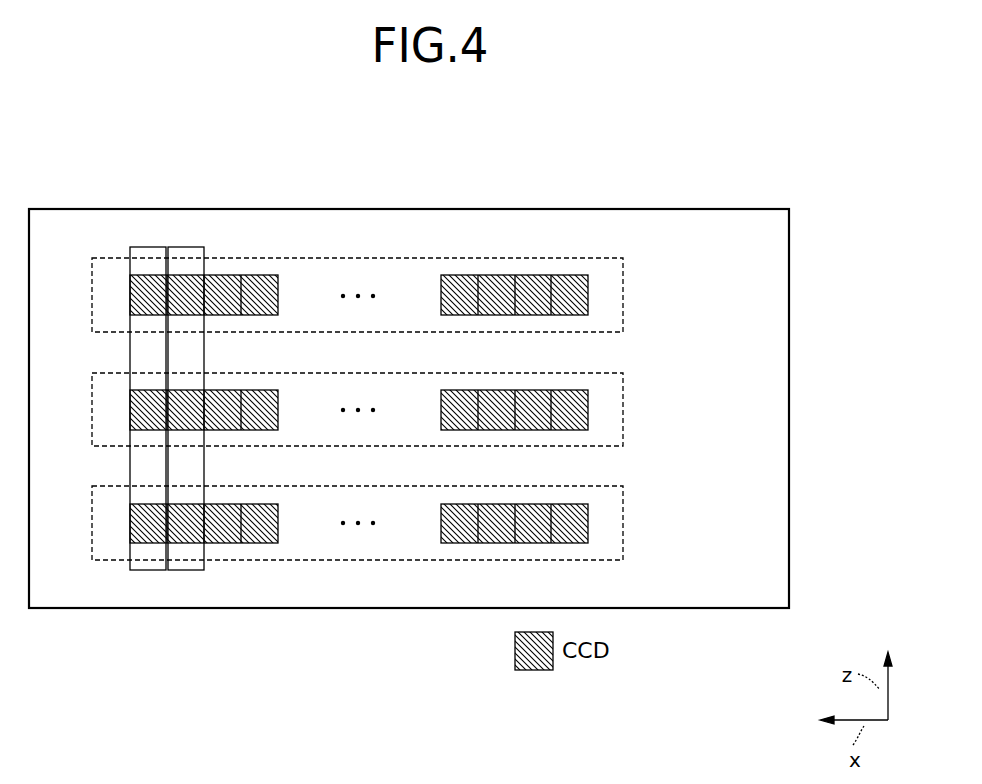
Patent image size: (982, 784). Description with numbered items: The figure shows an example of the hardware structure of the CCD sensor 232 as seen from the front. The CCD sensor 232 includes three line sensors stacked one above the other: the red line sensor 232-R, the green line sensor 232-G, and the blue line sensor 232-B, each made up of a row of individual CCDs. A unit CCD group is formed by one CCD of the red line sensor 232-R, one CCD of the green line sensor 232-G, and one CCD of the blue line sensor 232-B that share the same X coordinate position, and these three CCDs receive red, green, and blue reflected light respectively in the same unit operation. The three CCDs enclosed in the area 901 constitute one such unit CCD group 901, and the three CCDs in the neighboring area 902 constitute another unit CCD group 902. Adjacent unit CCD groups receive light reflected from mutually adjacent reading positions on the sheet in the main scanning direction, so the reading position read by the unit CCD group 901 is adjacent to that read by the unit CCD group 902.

The CCD sensor 232 is at (553, 208).
The red line sensor 232-R is at (625, 300).
The green line sensor 232-G is at (625, 415).
The blue line sensor 232-B is at (625, 528).
The unit CCD group 901 is at (148, 245).
The unit CCD group 902 is at (186, 245).